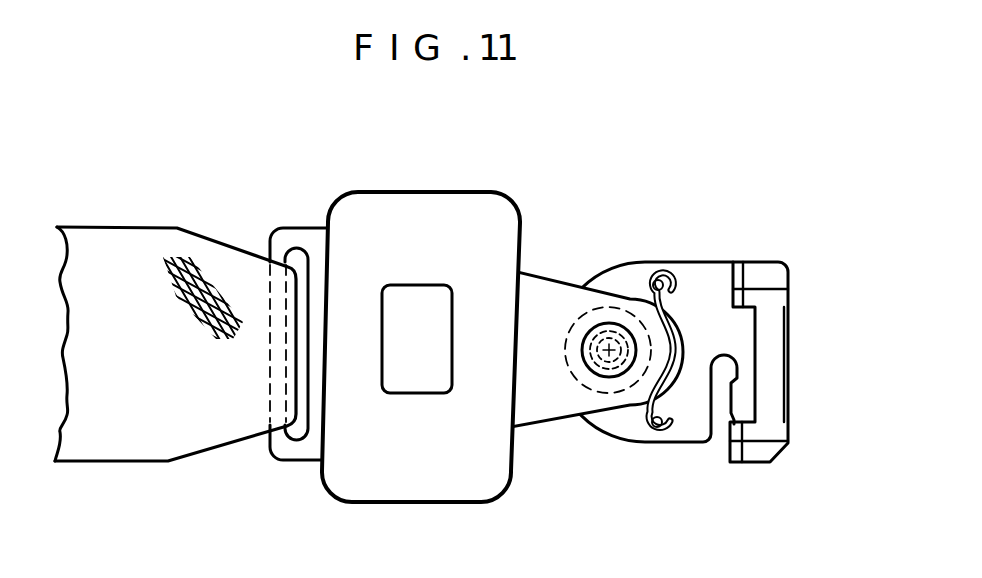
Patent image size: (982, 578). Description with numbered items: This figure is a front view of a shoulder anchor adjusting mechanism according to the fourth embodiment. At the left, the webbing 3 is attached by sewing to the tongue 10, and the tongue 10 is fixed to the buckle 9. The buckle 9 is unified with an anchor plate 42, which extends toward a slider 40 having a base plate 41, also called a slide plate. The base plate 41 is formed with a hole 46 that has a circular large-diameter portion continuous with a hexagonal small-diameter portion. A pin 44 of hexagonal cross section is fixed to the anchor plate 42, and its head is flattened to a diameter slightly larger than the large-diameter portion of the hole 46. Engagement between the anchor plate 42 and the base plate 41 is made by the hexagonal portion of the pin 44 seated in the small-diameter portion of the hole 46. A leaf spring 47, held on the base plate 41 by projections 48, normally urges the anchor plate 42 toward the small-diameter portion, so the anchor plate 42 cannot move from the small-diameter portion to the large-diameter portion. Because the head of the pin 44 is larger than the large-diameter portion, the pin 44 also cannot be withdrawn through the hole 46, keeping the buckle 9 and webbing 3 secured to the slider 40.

The webbing 3 is at (130, 250).
The buckle 9 is at (436, 213).
The tongue 10 is at (293, 448).
The slider 40 is at (775, 250).
The base plate 41 is at (636, 270).
The anchor plate 42 is at (548, 418).
The pin 44 is at (605, 300).
The hole 46 is at (739, 358).
The leaf spring 47 is at (674, 268).
The projections 48 is at (650, 444).